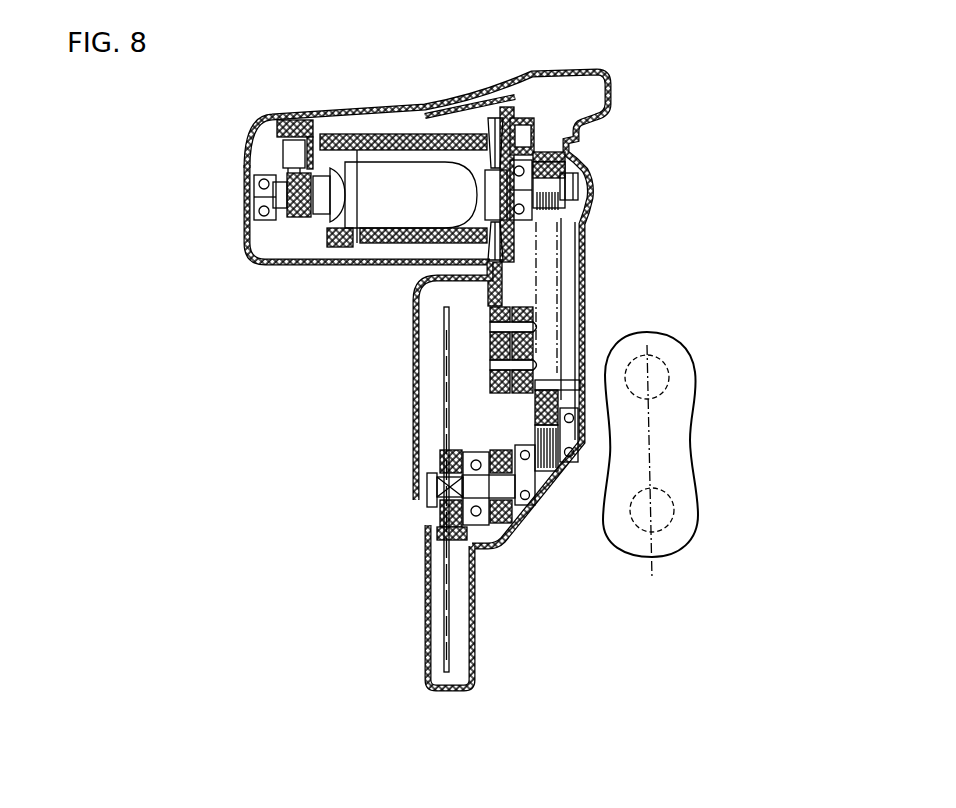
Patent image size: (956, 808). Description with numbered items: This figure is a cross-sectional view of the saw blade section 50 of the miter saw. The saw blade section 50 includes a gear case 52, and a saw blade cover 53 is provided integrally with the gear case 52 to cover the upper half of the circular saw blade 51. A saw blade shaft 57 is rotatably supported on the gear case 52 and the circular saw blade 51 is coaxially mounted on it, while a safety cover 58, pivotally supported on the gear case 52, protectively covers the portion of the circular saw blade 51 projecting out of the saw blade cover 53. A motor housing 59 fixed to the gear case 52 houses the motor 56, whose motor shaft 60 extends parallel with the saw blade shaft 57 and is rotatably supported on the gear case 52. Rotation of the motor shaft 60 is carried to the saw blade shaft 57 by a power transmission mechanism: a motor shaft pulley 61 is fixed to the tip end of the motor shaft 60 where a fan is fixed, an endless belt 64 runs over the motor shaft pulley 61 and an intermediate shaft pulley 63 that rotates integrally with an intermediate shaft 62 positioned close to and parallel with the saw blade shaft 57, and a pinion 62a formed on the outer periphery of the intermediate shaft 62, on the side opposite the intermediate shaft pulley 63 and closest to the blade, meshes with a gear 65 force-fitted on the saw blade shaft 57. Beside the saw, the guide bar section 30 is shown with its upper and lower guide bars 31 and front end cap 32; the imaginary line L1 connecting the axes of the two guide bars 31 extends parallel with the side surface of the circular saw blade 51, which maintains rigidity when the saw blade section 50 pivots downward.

The guide bar section 30 is at (757, 383).
The guide bar 31 is at (670, 500).
The front end cap 32 is at (660, 413).
The saw blade section 50 is at (640, 114).
The circular saw blade 51 is at (447, 570).
The gear case 52 is at (583, 252).
The saw blade cover 53 is at (413, 305).
The motor 56 is at (380, 175).
The saw blade shaft 57 is at (428, 505).
The safety cover 58 is at (472, 600).
The motor housing 59 is at (345, 109).
The motor shaft 60 is at (580, 162).
The motor shaft pulley 61 is at (556, 223).
The intermediate shaft 62 is at (480, 430).
The pinion 62a is at (482, 405).
The intermediate shaft pulley 63 is at (553, 382).
The endless belt 64 is at (563, 290).
The gear 65 is at (515, 520).
The imaginary line L1 is at (653, 571).